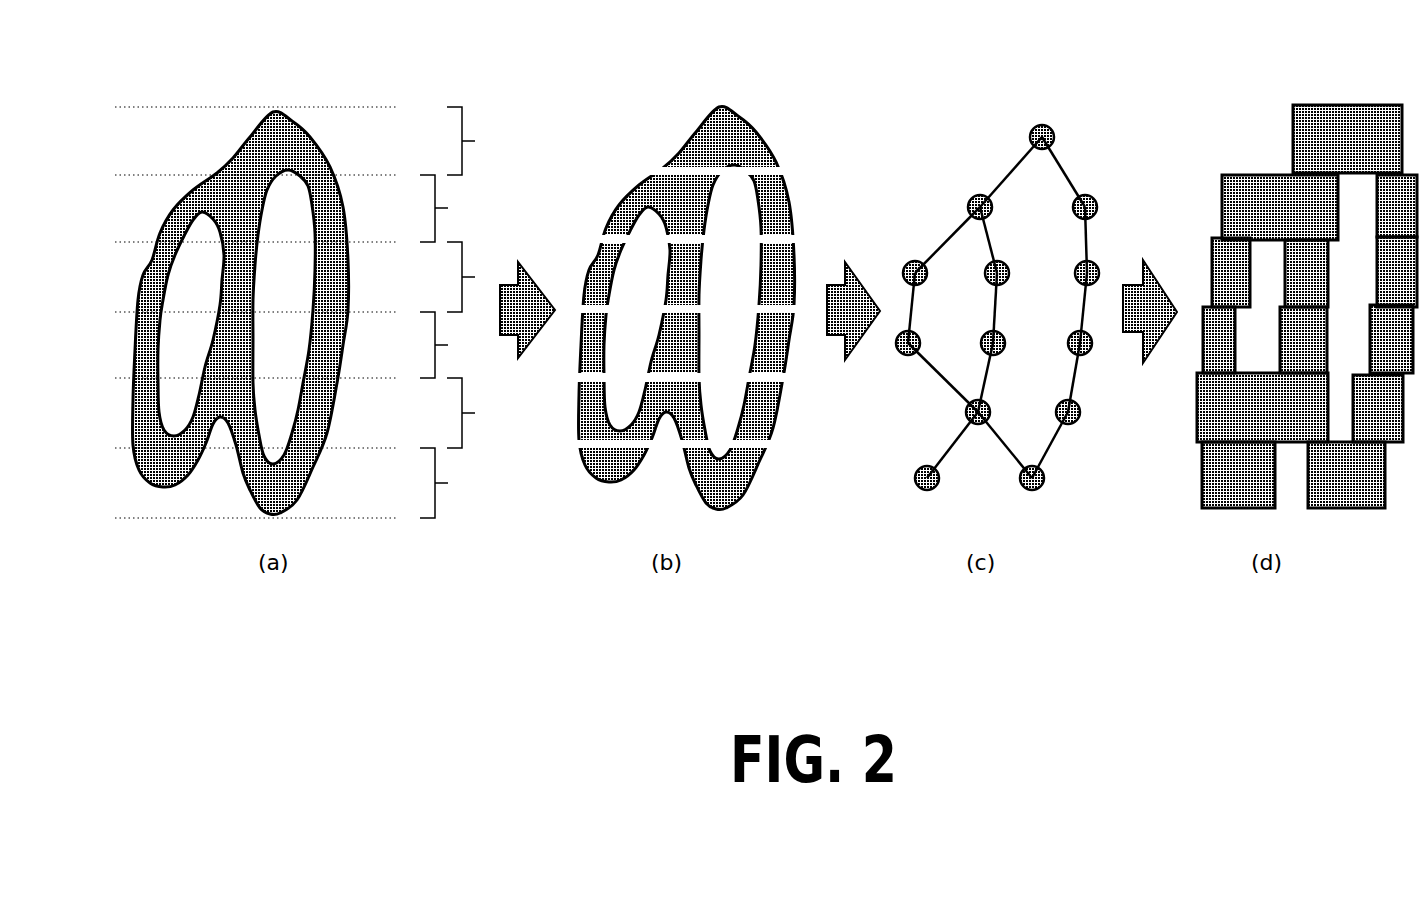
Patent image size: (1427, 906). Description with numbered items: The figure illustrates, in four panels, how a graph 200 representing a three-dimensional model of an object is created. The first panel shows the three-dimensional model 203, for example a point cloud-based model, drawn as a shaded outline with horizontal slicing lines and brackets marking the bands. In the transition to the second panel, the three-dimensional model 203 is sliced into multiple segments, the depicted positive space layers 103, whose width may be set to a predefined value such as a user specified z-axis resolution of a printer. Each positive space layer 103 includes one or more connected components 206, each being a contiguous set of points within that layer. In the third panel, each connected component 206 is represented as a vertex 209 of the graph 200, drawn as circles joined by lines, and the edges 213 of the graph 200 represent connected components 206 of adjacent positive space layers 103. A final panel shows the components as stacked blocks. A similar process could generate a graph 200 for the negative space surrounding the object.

The three-dimensional model 203 is at (261, 82).
The positive space layer 103 is at (690, 143).
The connected component 206 is at (695, 313).
The graph 200 is at (1029, 263).
The edge 213 is at (1000, 177).
The vertex 209 is at (1097, 200).